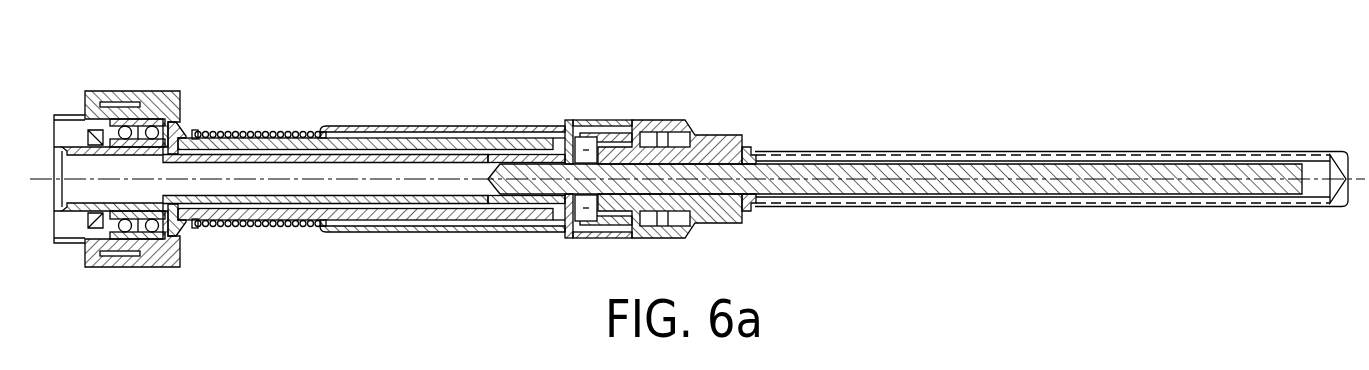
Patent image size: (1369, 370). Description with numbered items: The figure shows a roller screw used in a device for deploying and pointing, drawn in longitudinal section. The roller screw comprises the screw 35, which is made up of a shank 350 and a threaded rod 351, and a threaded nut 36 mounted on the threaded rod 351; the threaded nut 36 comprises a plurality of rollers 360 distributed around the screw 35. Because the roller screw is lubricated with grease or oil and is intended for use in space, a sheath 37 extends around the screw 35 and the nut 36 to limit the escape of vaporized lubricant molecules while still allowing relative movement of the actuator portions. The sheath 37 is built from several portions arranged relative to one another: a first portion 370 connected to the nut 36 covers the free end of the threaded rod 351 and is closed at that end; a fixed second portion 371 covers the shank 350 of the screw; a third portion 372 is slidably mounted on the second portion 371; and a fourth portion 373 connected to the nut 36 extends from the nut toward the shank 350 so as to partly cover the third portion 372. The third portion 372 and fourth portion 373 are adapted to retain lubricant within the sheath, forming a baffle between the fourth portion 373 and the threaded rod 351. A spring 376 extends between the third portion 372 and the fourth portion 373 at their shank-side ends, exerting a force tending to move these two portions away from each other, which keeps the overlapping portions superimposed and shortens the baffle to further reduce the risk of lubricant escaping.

The screw 35 is at (522, 200).
The threaded nut 36 is at (590, 223).
The sheath 37 is at (312, 243).
The shank 350 is at (281, 191).
The threaded rod 351 is at (785, 165).
The rollers 360 is at (708, 148).
The first portion 370 is at (1022, 151).
The second portion 371 is at (184, 133).
The third portion 372 is at (440, 136).
The fourth portion 373 is at (588, 119).
The spring 376 is at (283, 130).